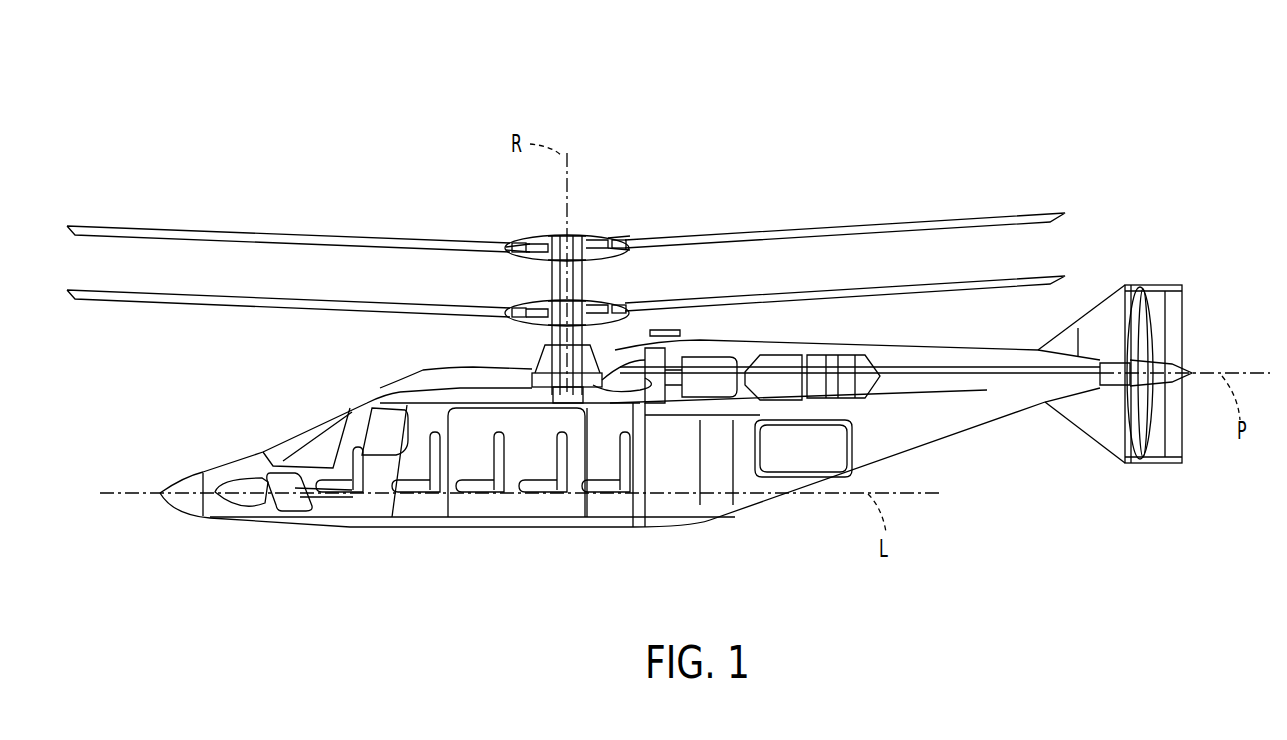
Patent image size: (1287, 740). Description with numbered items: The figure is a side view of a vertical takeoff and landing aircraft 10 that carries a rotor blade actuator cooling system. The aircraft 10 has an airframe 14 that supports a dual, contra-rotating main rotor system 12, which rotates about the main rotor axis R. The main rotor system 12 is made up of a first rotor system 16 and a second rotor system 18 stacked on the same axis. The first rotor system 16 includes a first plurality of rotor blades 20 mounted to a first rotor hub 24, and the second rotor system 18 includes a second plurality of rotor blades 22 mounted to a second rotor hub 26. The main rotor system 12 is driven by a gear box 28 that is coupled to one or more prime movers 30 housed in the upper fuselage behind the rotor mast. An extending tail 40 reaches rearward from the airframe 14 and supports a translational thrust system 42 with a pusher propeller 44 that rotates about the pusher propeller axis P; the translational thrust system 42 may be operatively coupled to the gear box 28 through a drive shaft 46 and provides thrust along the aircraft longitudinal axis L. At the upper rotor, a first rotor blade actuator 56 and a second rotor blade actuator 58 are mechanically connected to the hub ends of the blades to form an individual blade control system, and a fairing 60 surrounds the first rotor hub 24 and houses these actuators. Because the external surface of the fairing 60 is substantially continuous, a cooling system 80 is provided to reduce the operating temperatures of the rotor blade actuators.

The vertical takeoff and landing (VTOL) aircraft 10 is at (850, 114).
The dual, contra-rotating main rotor system 12 is at (645, 234).
The airframe 14 is at (392, 388).
The first rotor system 16 is at (528, 224).
The second rotor system 18 is at (638, 290).
The first plurality of rotor blades 20 is at (748, 233).
The second plurality of rotor blades 22 is at (808, 297).
The first rotor hub 24 is at (587, 237).
The second rotor hub 26 is at (537, 305).
The gear box 28 is at (536, 382).
The prime movers 30 is at (720, 392).
The extending tail 40 is at (962, 425).
The translational thrust system 42 is at (1203, 303).
The pusher propeller 44 is at (1148, 345).
The drive shaft 46 is at (1008, 385).
The first rotor blade actuator 56 is at (505, 254).
The second rotor blade actuator 58 is at (621, 250).
The fairing 60 is at (516, 238).
The cooling system 80 is at (602, 241).